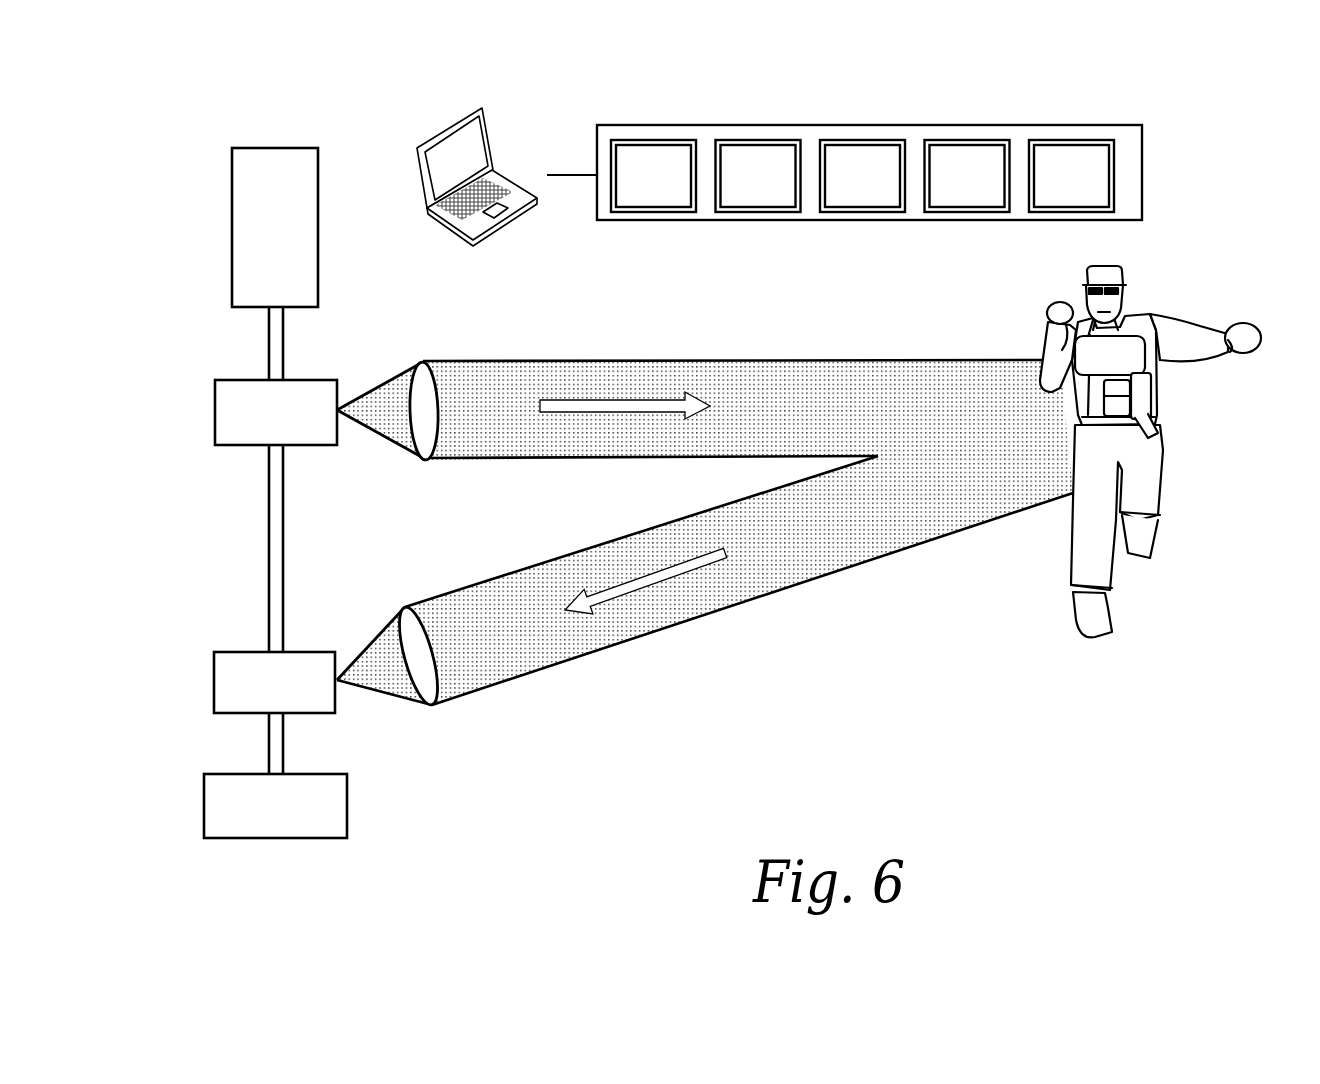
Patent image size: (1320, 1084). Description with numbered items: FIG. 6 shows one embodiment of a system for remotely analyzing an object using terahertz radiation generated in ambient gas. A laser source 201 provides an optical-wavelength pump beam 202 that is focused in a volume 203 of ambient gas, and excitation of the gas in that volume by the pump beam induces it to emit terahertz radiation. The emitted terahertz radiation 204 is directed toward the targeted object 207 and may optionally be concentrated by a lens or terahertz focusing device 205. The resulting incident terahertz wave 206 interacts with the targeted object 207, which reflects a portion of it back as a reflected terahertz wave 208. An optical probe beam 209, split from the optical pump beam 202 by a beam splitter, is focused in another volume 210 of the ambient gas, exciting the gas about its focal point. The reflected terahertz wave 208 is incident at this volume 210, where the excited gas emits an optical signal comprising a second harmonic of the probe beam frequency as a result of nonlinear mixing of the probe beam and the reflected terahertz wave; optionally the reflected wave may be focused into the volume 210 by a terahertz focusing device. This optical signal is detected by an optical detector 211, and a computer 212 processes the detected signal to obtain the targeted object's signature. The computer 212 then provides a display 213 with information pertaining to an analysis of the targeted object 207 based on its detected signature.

The laser source 201 is at (232, 203).
The optical pump beam 202 is at (268, 341).
The volume of ambient gas 203 is at (215, 410).
The emitted terahertz radiation 204 is at (385, 443).
The terahertz focusing device 205 is at (423, 361).
The incident terahertz wave 206 is at (761, 360).
The targeted object 207 is at (1163, 448).
The reflected terahertz wave 208 is at (708, 614).
The optical probe beam 209 is at (268, 545).
The volume of ambient gas 210 is at (214, 683).
The optical detector 211 is at (204, 806).
The computer 212 is at (461, 122).
The display 213 is at (908, 125).